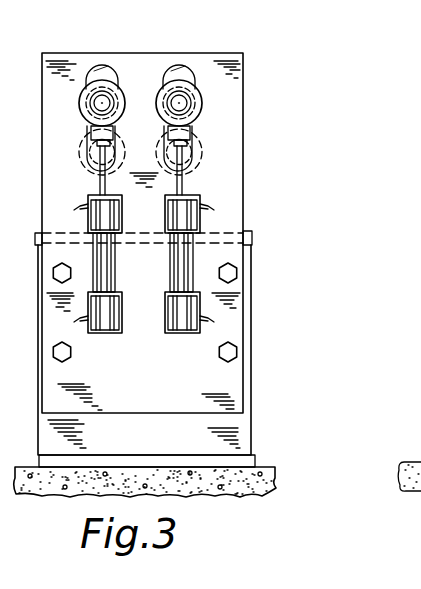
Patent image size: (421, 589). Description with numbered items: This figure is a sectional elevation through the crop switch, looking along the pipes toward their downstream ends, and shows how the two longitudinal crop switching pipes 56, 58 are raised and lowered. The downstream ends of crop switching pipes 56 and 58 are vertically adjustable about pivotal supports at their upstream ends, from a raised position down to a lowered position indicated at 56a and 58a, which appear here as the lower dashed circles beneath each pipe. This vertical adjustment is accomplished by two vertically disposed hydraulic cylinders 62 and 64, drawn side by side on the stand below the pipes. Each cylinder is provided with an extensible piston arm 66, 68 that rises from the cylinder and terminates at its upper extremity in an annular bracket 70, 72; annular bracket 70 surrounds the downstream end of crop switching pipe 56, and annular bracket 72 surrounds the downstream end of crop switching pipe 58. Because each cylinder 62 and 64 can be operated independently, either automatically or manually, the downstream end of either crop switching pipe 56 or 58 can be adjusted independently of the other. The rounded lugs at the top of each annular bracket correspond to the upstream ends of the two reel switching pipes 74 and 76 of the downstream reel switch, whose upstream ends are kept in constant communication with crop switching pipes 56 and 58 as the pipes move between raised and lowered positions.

The reel switching pipe 76 is at (96, 65).
The reel switching pipe 74 is at (170, 65).
The annular bracket 72 is at (79, 95).
The annular bracket 70 is at (198, 116).
The crop switching pipe 58 is at (92, 110).
The crop switching pipe 56 is at (194, 101).
The lowered position of crop switching pipe 58a is at (82, 152).
The lowered position of crop switching pipe 56a is at (200, 161).
The extensible piston arm 68 is at (100, 186).
The extensible piston arm 66 is at (184, 189).
The hydraulic cylinder 64 is at (108, 254).
The hydraulic cylinder 62 is at (177, 279).